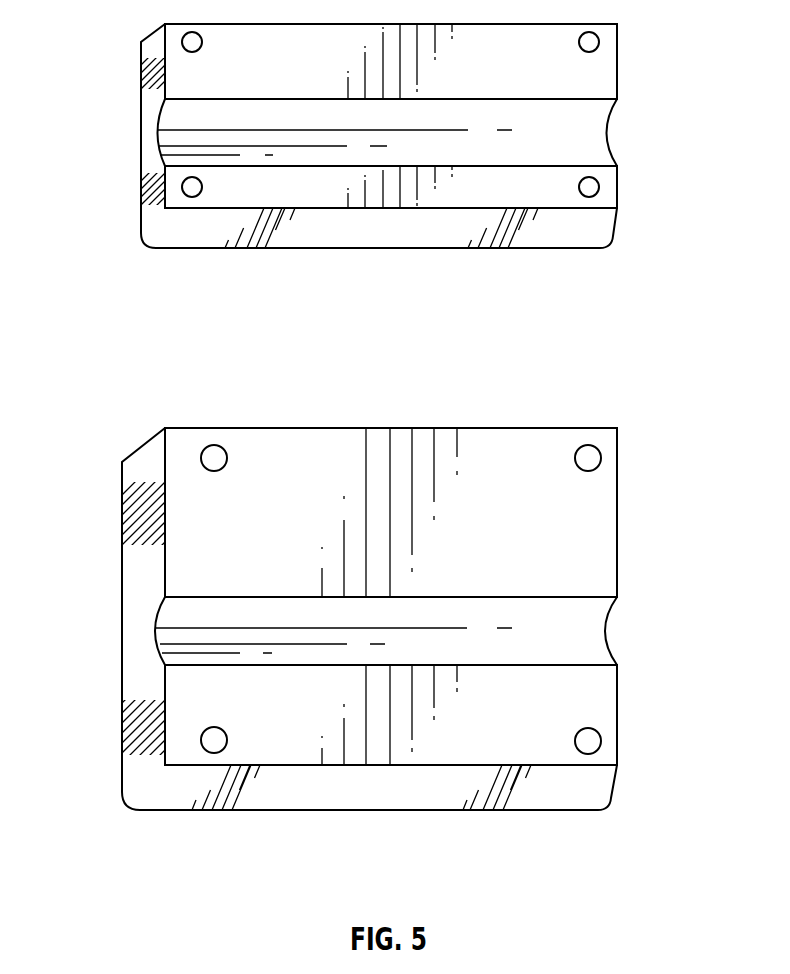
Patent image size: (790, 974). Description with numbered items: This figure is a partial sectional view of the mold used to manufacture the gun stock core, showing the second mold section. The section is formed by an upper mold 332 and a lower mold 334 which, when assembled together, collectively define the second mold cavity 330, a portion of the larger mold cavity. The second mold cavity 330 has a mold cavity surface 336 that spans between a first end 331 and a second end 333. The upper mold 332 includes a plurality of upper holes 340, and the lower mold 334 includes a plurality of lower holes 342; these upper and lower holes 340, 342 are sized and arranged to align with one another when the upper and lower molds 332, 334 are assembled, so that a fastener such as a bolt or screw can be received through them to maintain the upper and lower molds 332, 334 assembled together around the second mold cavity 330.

The second mold cavity 330 is at (168, 122).
The first end 331 is at (165, 663).
The upper mold 332 is at (600, 63).
The second end 333 is at (593, 607).
The lower mold 334 is at (605, 760).
The mold cavity surface 336 is at (193, 613).
The upper holes 340 is at (598, 185).
The lower holes 342 is at (597, 742).